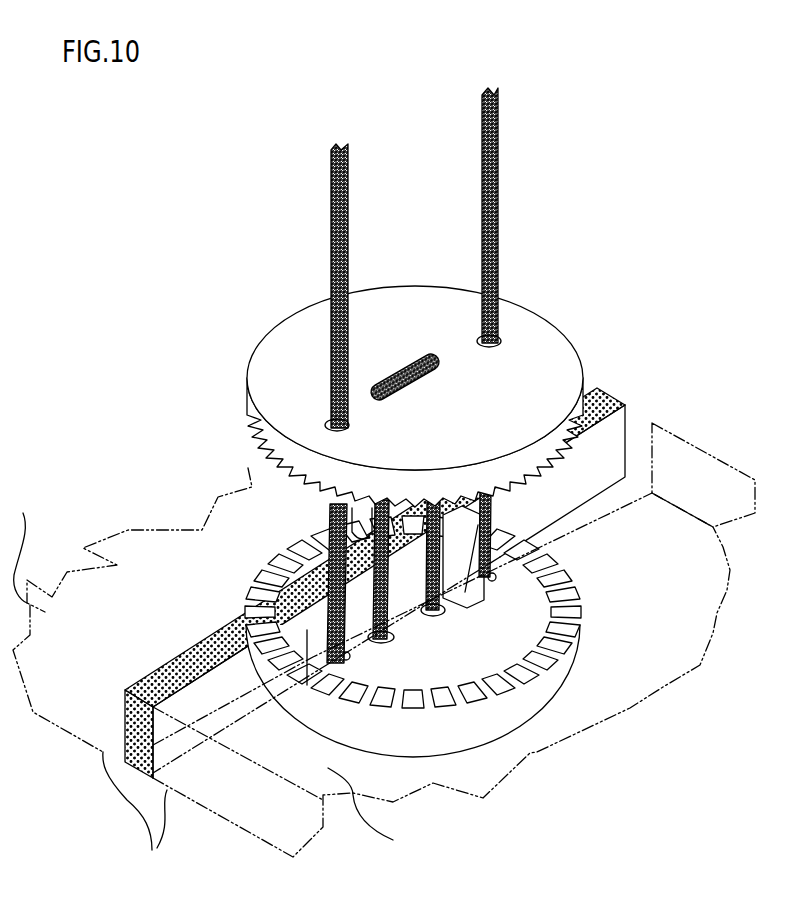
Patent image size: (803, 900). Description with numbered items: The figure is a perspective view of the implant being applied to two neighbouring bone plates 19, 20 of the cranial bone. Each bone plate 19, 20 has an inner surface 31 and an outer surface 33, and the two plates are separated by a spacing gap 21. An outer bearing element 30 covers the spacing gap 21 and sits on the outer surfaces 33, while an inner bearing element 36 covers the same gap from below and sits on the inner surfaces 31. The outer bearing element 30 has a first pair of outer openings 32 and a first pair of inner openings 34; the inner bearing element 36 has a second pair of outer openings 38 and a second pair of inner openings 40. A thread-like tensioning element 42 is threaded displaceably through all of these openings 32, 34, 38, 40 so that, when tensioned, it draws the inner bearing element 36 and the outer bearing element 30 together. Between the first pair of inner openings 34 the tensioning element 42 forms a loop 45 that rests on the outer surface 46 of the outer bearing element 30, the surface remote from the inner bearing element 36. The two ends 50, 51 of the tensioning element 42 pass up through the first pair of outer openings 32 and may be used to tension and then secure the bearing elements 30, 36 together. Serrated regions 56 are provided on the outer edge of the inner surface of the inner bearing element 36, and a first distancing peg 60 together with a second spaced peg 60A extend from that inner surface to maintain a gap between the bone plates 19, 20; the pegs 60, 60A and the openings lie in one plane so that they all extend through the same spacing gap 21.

The bone plate 19 is at (67, 570).
The bone plate 20 is at (684, 437).
The spacing gap 21 is at (637, 410).
The outer bearing element 30 is at (442, 362).
The inner surface 31 is at (135, 820).
The first pair of outer openings 32 is at (500, 343).
The outer surface 33 is at (219, 671).
The first pair of inner openings 34 is at (448, 367).
The inner bearing element 36 is at (467, 636).
The second pair of outer openings 38 is at (494, 576).
The second pair of inner openings 40 is at (398, 638).
The tensioning element 42 is at (507, 181).
The loop 45 is at (397, 372).
The outer surface 46 is at (378, 325).
The end 50 is at (348, 157).
The end 51 is at (497, 100).
The serrated region 56 is at (556, 578).
The distancing peg 60 is at (268, 596).
The second spaced peg 60A is at (486, 526).